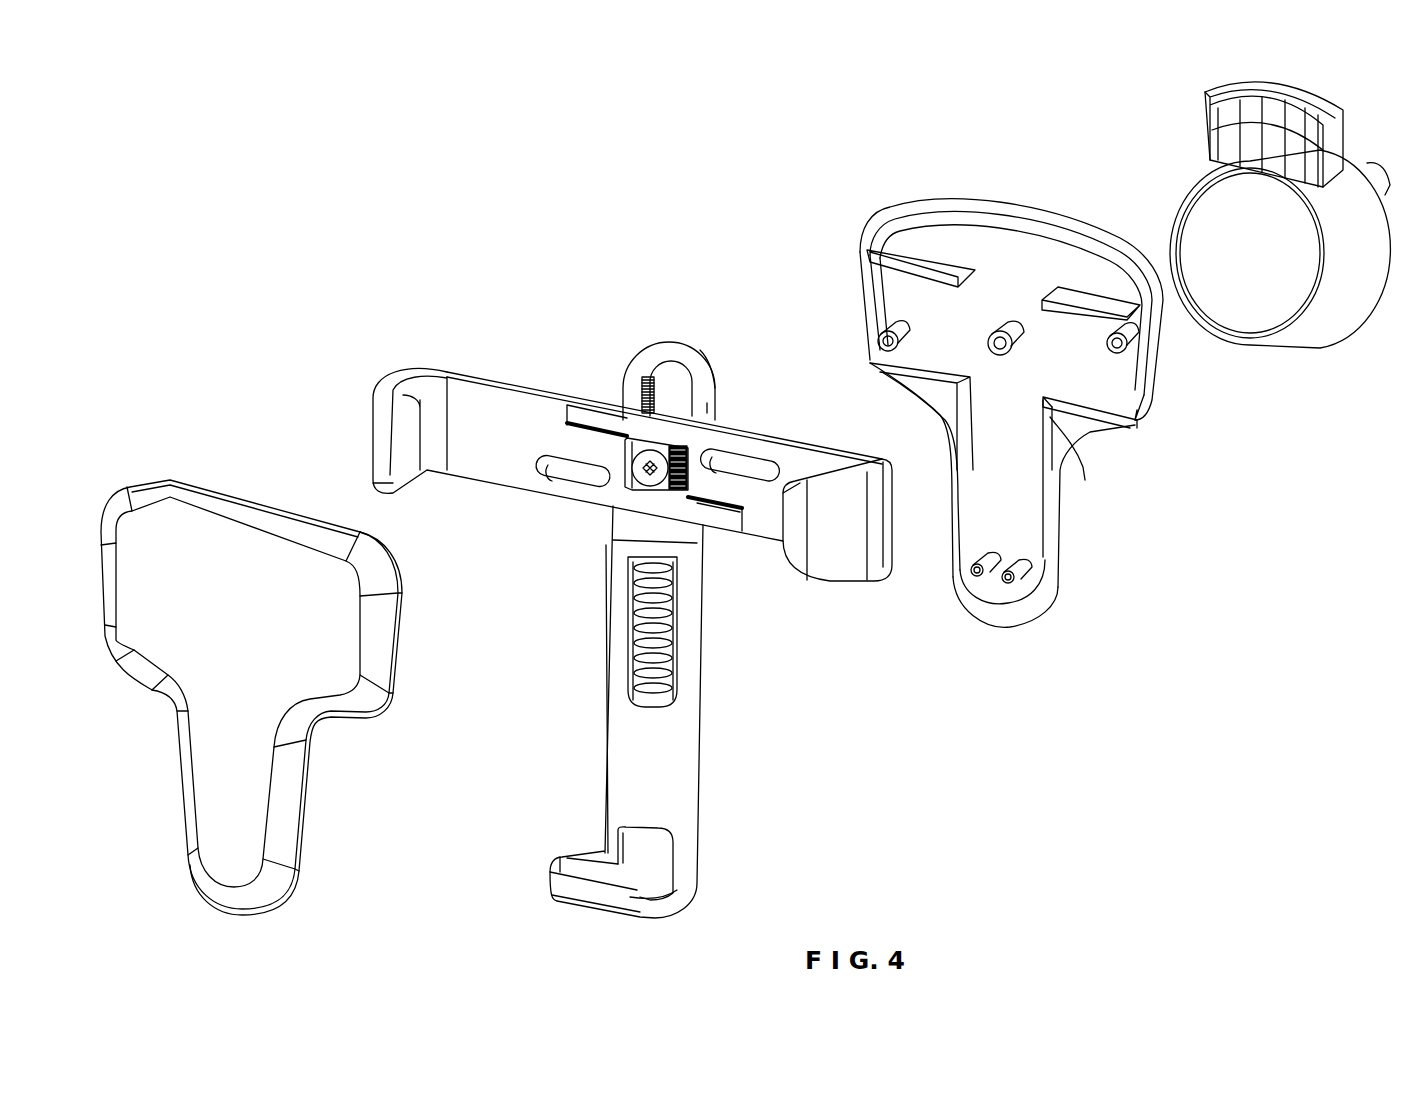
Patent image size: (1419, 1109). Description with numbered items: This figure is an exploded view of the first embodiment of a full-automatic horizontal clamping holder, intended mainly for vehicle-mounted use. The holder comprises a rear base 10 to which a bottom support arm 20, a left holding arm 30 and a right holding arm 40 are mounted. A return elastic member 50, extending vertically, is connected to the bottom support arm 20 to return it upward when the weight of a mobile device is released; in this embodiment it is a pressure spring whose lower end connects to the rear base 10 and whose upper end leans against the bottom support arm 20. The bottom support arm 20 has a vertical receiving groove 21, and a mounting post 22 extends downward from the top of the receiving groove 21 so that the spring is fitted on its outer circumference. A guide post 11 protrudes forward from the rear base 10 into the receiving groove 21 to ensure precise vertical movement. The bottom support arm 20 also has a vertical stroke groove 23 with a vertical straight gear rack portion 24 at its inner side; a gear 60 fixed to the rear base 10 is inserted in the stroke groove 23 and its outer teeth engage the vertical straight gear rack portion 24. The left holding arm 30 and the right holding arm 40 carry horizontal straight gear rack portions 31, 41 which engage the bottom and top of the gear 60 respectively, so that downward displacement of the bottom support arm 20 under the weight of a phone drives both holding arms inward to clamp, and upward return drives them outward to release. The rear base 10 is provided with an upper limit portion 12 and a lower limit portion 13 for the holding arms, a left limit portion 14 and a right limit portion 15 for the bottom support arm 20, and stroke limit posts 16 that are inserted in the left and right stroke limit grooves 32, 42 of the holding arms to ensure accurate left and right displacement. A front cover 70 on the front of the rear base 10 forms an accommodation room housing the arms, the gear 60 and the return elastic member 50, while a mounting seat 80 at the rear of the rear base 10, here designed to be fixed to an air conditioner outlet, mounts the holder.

The rear base 10 is at (1010, 454).
The guide post 11 is at (980, 575).
The upper limit portion 12 is at (878, 263).
The lower limit portion 13 is at (880, 375).
The left limit portion 14 is at (955, 432).
The right limit portion 15 is at (1043, 440).
The stroke limit posts 16 is at (878, 341).
The bottom support arm 20 is at (652, 712).
The receiving groove 21 is at (630, 578).
The mounting post 22 is at (648, 605).
The stroke groove 23 is at (673, 387).
The vertical straight gear rack portion 24 is at (642, 380).
The left holding arm 30 is at (632, 491).
The horizontal straight gear rack portion 31 is at (697, 503).
The left stroke limit groove 32 is at (573, 470).
The right holding arm 40 is at (758, 528).
The horizontal straight gear rack portion 41 is at (615, 427).
The right stroke limit groove 42 is at (762, 462).
The return elastic member 50 is at (640, 643).
The gear 60 is at (662, 455).
The front cover 70 is at (242, 675).
The mounting seat 80 is at (1313, 343).